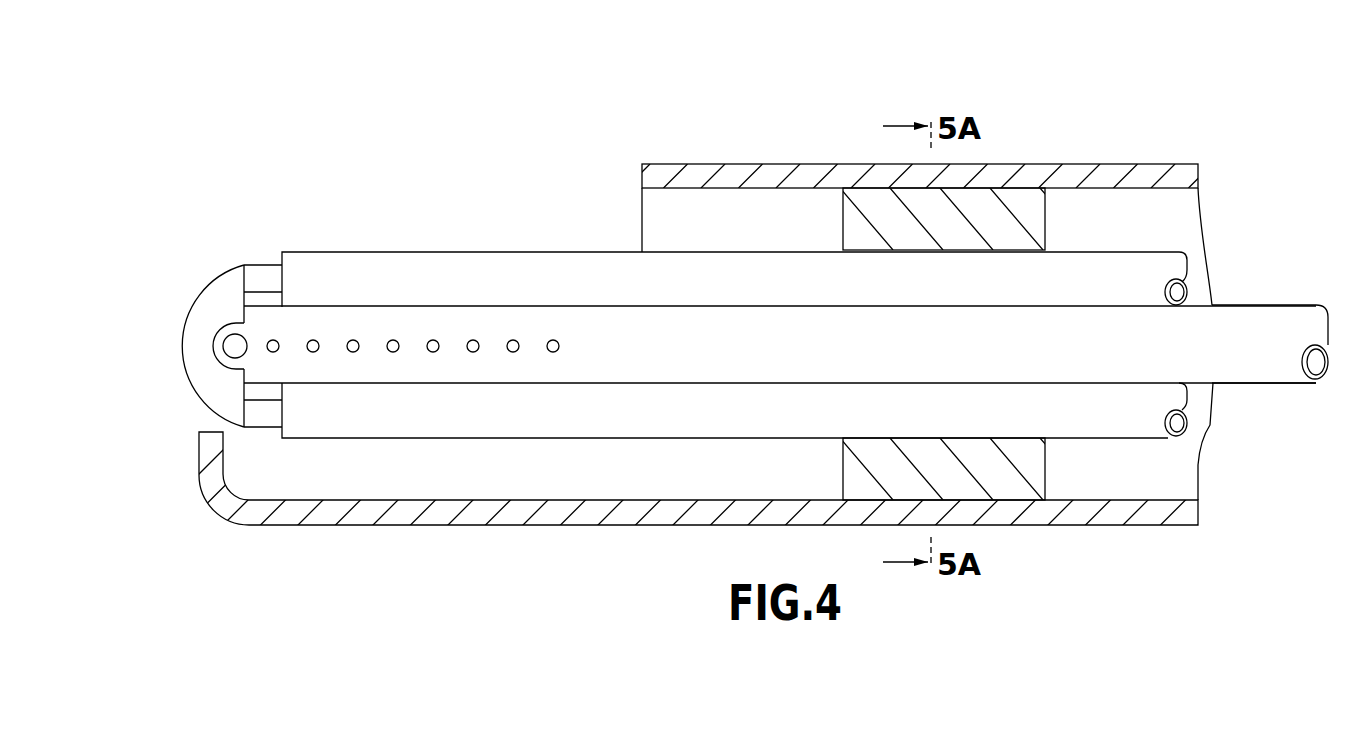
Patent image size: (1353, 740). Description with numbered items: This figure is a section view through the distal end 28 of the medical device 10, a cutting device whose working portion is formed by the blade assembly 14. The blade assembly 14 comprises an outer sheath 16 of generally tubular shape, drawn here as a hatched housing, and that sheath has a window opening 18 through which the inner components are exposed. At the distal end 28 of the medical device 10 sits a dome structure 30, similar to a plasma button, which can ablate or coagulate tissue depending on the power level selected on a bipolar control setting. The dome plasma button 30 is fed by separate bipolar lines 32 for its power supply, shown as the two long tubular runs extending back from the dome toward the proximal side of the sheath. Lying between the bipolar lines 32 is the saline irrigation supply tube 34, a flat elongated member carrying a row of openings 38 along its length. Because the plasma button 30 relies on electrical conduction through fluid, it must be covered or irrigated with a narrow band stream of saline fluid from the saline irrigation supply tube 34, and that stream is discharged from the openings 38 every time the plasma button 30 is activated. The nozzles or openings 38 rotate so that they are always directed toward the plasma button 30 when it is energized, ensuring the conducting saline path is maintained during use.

The medical device 10 is at (234, 120).
The blade assembly 14 is at (1173, 143).
The outer sheath 16 is at (1138, 524).
The window opening 18 is at (290, 210).
The distal end 28 is at (163, 310).
The dome structure 30 is at (185, 370).
The bipolar lines 32 is at (715, 297).
The saline irrigation supply tube 34 is at (578, 368).
The openings 38 is at (475, 341).